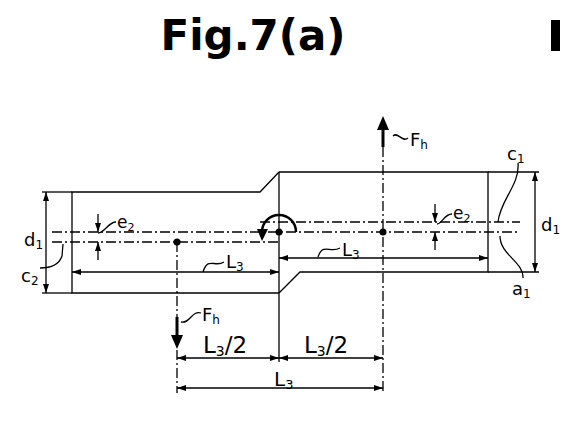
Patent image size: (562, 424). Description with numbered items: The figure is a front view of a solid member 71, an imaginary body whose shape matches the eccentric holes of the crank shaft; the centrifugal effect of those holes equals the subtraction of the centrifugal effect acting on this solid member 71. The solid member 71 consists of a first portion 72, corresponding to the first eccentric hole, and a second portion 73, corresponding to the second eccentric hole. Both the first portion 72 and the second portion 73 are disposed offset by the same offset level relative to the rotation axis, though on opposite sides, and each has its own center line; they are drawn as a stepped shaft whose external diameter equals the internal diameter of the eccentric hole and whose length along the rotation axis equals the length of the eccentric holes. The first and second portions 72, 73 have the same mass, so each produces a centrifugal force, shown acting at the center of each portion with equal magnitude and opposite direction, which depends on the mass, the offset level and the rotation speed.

The solid member 71 is at (317, 114).
The first portion 72 is at (302, 171).
The second portion 73 is at (235, 192).